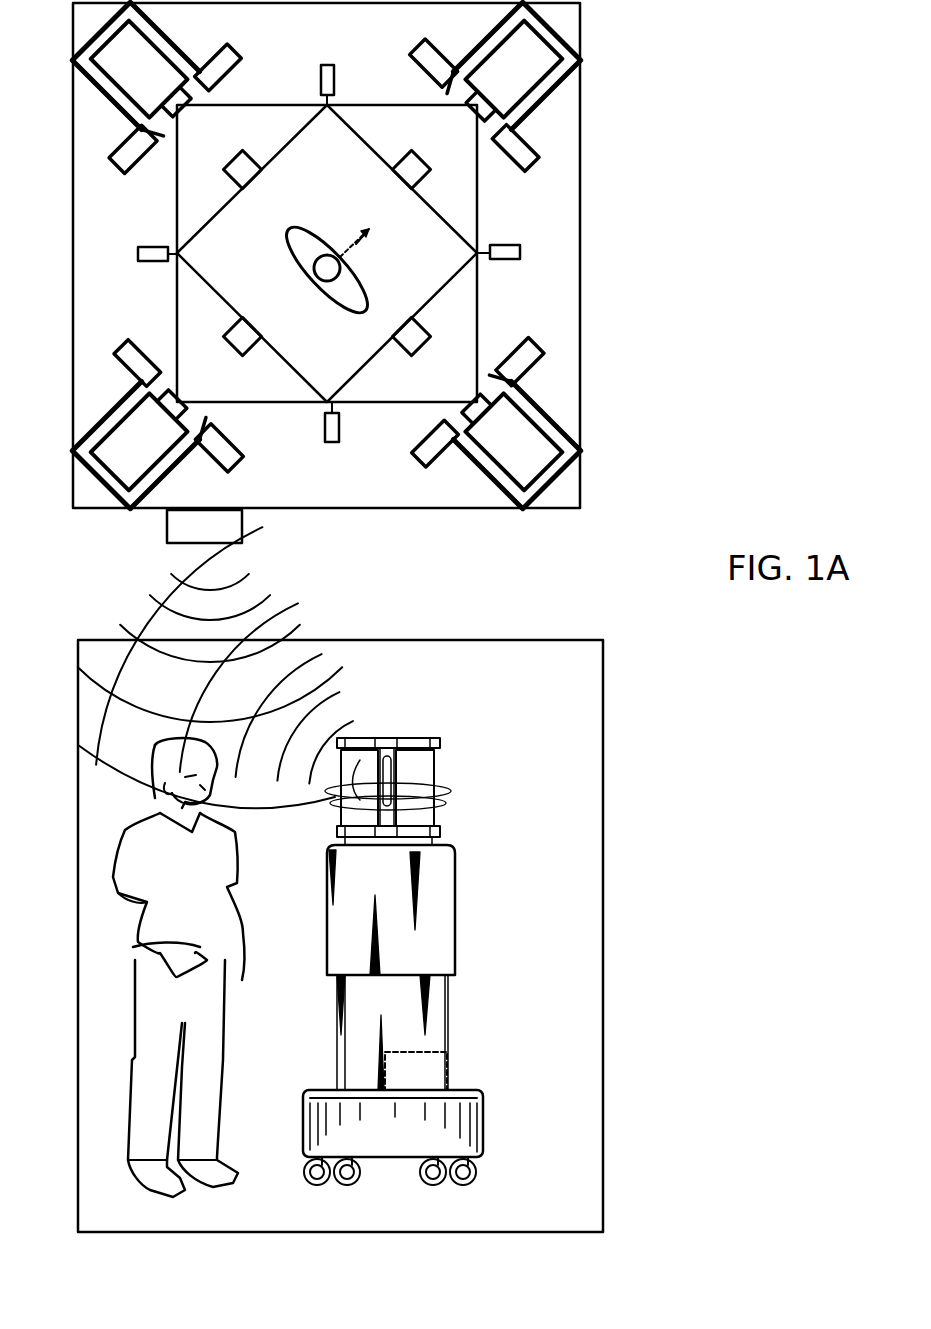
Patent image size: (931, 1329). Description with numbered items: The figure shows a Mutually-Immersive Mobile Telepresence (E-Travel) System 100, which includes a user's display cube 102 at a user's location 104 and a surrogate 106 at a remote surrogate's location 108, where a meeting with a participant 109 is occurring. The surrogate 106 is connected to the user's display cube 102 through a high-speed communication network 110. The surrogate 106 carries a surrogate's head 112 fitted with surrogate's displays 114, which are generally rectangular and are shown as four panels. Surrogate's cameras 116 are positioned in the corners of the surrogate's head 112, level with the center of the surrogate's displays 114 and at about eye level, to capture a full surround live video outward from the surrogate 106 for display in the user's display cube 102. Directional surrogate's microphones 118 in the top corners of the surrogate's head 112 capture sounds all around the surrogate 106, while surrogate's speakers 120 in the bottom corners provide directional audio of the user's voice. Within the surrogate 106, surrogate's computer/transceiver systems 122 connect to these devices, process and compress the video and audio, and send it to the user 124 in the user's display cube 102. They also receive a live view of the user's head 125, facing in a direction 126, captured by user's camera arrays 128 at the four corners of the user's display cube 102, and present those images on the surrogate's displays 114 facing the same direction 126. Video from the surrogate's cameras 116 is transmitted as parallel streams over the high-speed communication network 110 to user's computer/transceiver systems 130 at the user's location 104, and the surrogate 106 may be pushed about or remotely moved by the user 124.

The Mutually-Immersive Mobile Telepresence (E-Travel) System 100 is at (648, 673).
The user's display cube 102 is at (434, 295).
The user's location 104 is at (326, 269).
The surrogate 106 is at (412, 933).
The surrogate's location 108 is at (340, 936).
The participant 109 is at (178, 967).
The high-speed communication network 110 is at (387, 592).
The surrogate's head 112 is at (423, 759).
The surrogate's displays 114 is at (442, 742).
The surrogate's cameras 116 is at (338, 806).
The surrogate's microphones 118 is at (366, 706).
The surrogate's speakers 120 is at (447, 838).
The surrogate's computer/transceiver systems 122 is at (416, 1071).
The user 124 is at (288, 232).
The user's head 125 is at (330, 282).
The direction 126 is at (342, 258).
The user's camera arrays 128 is at (335, 75).
The user's computer/transceiver systems 130 is at (204, 526).